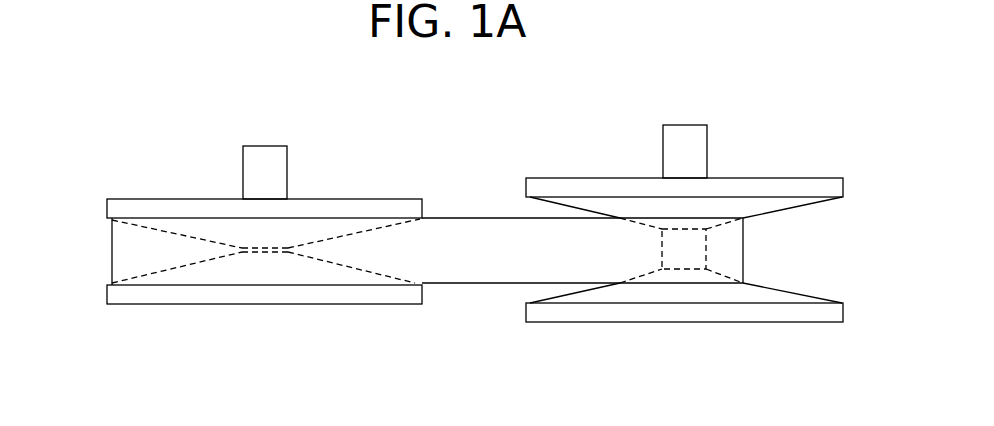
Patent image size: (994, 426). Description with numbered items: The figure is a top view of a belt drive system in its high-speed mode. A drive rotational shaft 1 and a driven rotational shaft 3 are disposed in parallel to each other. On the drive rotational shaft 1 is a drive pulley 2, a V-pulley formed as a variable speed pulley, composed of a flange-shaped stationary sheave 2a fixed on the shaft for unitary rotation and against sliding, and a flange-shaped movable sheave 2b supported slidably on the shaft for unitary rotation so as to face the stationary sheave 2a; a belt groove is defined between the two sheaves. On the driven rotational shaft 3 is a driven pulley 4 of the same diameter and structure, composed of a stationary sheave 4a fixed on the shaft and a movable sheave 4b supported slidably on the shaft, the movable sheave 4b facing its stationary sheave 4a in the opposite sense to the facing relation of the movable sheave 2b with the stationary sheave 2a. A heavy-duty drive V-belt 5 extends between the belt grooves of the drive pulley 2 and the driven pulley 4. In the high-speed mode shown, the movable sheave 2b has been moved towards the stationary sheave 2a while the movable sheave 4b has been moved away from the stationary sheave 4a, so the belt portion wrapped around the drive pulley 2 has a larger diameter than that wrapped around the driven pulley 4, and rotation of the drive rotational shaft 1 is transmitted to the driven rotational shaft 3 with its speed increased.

The drive rotational shaft 1 is at (270, 146).
The drive pulley 2 is at (158, 199).
The stationary sheave 2a is at (110, 208).
The movable sheave 2b is at (205, 304).
The driven rotational shaft 3 is at (688, 125).
The driven pulley 4 is at (801, 178).
The stationary sheave 4a is at (652, 322).
The movable sheave 4b is at (843, 189).
The V-belt 5 is at (112, 255).